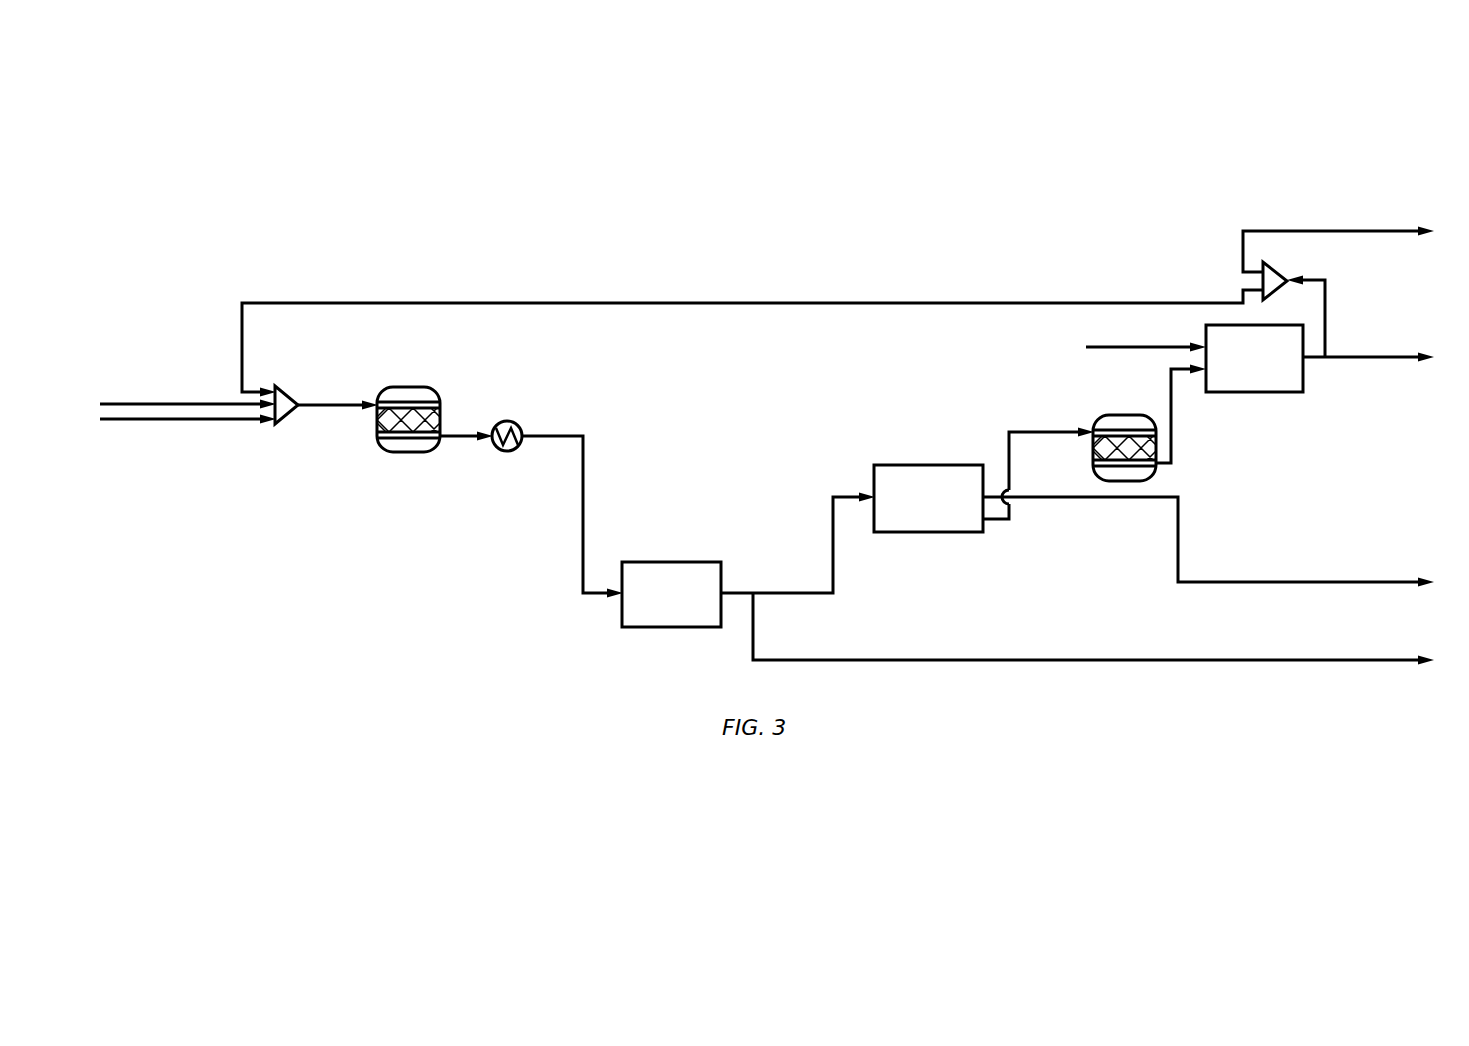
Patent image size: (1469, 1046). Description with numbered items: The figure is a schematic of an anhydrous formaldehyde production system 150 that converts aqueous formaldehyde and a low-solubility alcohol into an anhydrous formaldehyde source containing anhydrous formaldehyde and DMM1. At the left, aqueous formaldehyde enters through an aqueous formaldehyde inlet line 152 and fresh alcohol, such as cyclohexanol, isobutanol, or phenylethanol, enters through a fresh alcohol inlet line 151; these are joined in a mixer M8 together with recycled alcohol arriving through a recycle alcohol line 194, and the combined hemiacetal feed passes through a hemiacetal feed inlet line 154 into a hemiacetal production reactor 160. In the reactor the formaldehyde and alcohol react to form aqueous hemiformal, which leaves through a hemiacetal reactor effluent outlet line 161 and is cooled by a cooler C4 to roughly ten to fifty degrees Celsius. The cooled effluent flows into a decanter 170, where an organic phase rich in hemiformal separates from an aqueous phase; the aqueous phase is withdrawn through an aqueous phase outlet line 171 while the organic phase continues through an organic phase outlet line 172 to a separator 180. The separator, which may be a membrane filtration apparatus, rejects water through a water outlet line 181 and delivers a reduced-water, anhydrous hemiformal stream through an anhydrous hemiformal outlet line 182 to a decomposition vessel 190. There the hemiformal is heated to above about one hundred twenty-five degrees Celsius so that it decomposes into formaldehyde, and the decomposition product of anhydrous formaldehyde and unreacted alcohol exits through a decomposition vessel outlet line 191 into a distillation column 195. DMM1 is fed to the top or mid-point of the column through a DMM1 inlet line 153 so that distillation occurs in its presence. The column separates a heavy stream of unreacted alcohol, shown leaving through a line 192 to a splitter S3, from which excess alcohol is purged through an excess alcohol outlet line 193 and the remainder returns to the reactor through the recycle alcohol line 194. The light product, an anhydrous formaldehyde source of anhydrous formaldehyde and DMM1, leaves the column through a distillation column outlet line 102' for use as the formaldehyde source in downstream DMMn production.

The anhydrous formaldehyde production system 150 is at (1290, 103).
The fresh alcohol inlet line 151 is at (127, 404).
The aqueous formaldehyde inlet line 152 is at (148, 420).
The mixer M8 is at (294, 428).
The hemiacetal feed inlet line 154 is at (335, 404).
The hemiacetal production reactor 160 is at (410, 387).
The hemiacetal reactor effluent outlet line 161 is at (458, 437).
The cooler C4 is at (518, 424).
The decanter 170 is at (670, 562).
The aqueous phase outlet line 171 is at (855, 660).
The organic phase outlet line 172 is at (782, 593).
The separator 180 is at (930, 465).
The water outlet line 181 is at (1055, 497).
The anhydrous hemiformal outlet line 182 is at (1048, 432).
The decomposition vessel 190 is at (1093, 455).
The decomposition vessel outlet line 191 is at (1171, 433).
The DMM1 inlet line 153 is at (1108, 347).
The distillation column 195 is at (1250, 392).
The overhead stream 192 is at (1325, 318).
The splitter S3 is at (1280, 265).
The excess alcohol outlet line 193 is at (1322, 231).
The recycle alcohol line 194 is at (897, 303).
The distillation column outlet line 102' is at (1386, 343).